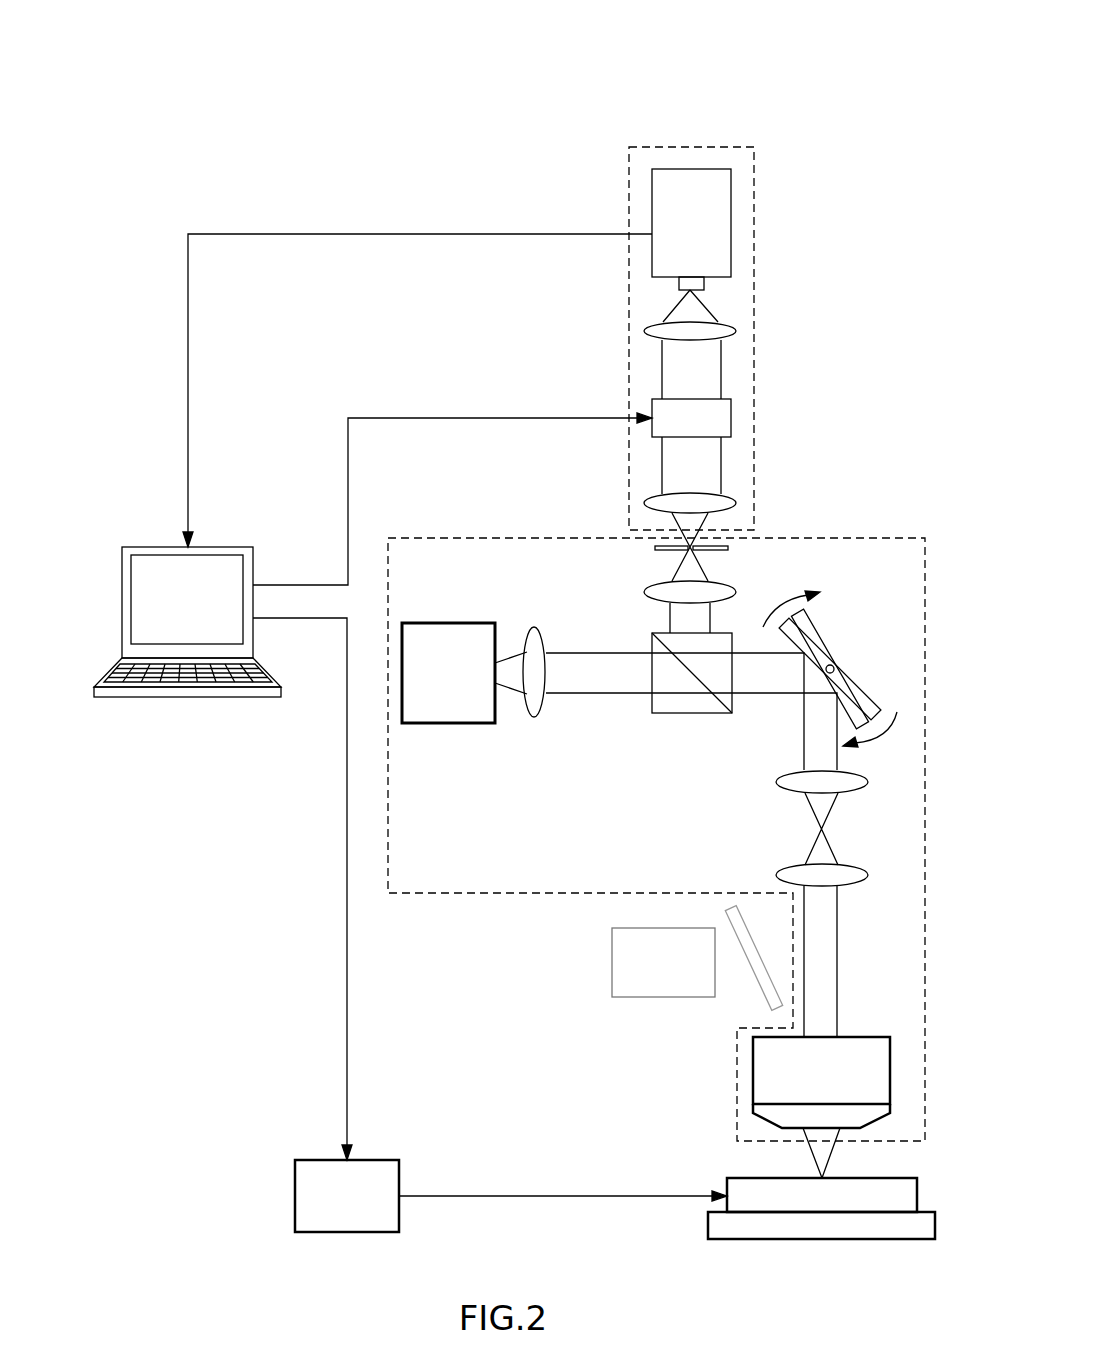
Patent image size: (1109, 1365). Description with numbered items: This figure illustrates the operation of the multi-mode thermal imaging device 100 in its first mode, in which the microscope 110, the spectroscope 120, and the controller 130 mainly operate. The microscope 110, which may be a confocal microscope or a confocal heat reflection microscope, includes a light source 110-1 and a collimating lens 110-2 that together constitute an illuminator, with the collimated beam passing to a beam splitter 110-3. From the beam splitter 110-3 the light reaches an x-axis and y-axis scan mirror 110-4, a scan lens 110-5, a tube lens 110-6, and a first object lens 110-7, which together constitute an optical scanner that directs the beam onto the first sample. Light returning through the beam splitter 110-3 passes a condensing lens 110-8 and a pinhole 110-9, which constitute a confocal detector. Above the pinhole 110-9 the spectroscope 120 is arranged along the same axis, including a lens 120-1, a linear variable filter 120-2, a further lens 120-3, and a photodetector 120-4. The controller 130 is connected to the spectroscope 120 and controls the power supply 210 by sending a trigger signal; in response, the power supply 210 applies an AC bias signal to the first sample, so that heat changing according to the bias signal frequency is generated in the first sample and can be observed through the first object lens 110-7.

The multi-mode thermal imaging device 100 is at (481, 39).
The microscope 110 is at (900, 538).
The light source 110-1 is at (447, 622).
The collimating lens 110-2 is at (534, 630).
The beam splitter 110-3 is at (652, 713).
The x-axis and y-axis scan mirror 110-4 is at (820, 635).
The scan lens 110-5 is at (775, 782).
The tube lens 110-6 is at (775, 875).
The first object lens 110-7 is at (853, 1037).
The condensing lens 110-8 is at (650, 588).
The pinhole 110-9 is at (728, 548).
The spectroscope 120 is at (754, 147).
The lens 120-1 is at (738, 503).
The linear variable filter 120-2 is at (731, 418).
The lens 120-3 is at (738, 331).
The photodetector 120-4 is at (731, 222).
The controller 130 is at (141, 547).
The power supply 210 is at (377, 1160).